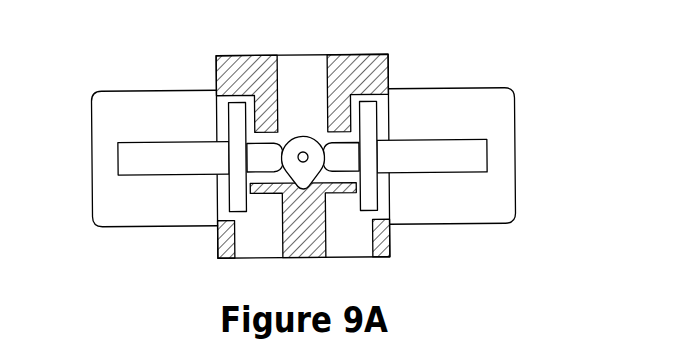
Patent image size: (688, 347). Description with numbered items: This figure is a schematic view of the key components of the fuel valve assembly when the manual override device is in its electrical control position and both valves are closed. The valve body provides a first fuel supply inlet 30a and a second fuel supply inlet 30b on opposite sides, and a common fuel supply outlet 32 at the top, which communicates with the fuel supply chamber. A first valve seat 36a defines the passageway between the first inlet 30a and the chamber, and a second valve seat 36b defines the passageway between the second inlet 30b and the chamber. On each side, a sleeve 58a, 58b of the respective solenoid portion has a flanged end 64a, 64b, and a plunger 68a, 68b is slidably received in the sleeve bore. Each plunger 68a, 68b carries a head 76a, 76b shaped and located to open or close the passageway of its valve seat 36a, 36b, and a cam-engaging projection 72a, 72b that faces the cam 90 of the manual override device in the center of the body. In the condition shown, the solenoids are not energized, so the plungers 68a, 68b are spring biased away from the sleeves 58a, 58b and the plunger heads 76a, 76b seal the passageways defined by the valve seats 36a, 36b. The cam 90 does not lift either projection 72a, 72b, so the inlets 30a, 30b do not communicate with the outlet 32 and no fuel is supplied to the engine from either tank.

The fuel supply outlet 32 is at (295, 68).
The first valve seat 36a is at (247, 123).
The second valve seat 36b is at (354, 128).
The sleeve 58a is at (145, 227).
The sleeve 58b is at (462, 224).
The flanged end 64a is at (145, 129).
The flanged end 64b is at (485, 125).
The plunger 68a is at (135, 158).
The plunger 68b is at (437, 152).
The cam-engaging projection 72a is at (270, 163).
The cam-engaging projection 72b is at (340, 160).
The head 76a is at (238, 136).
The head 76b is at (370, 141).
The cam 90 is at (307, 146).
The first fuel supply inlet 30a is at (250, 246).
The second fuel supply inlet 30b is at (356, 246).